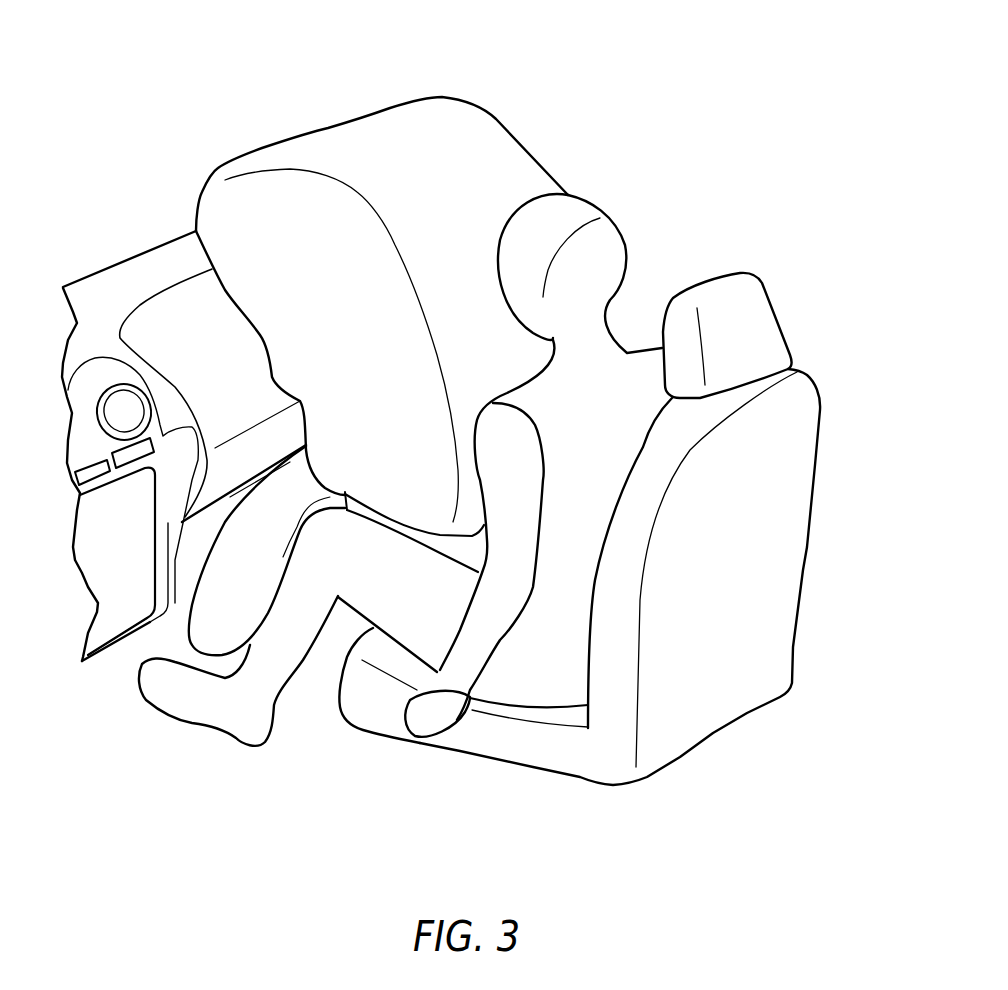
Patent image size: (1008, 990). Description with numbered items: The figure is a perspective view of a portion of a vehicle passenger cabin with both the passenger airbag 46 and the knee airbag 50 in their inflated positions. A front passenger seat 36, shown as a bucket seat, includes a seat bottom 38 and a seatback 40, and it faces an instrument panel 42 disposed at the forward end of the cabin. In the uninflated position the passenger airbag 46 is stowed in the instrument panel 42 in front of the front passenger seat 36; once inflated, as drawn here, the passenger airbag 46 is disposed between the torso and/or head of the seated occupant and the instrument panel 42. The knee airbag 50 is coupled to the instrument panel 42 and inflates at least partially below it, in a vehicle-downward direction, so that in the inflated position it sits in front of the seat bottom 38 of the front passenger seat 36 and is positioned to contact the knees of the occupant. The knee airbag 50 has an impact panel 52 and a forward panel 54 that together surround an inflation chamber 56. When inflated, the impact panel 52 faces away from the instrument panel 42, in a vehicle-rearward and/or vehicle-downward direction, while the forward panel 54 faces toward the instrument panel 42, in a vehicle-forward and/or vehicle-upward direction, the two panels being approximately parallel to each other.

The front passenger seat 36 is at (804, 572).
The seat bottom 38 is at (421, 749).
The seatback 40 is at (819, 436).
The instrument panel 42 is at (150, 245).
The passenger airbag 46 is at (465, 100).
The knee airbag 50 is at (200, 628).
The impact panel 52 is at (252, 613).
The forward panel 54 is at (237, 510).
The inflation chamber 56 is at (200, 625).